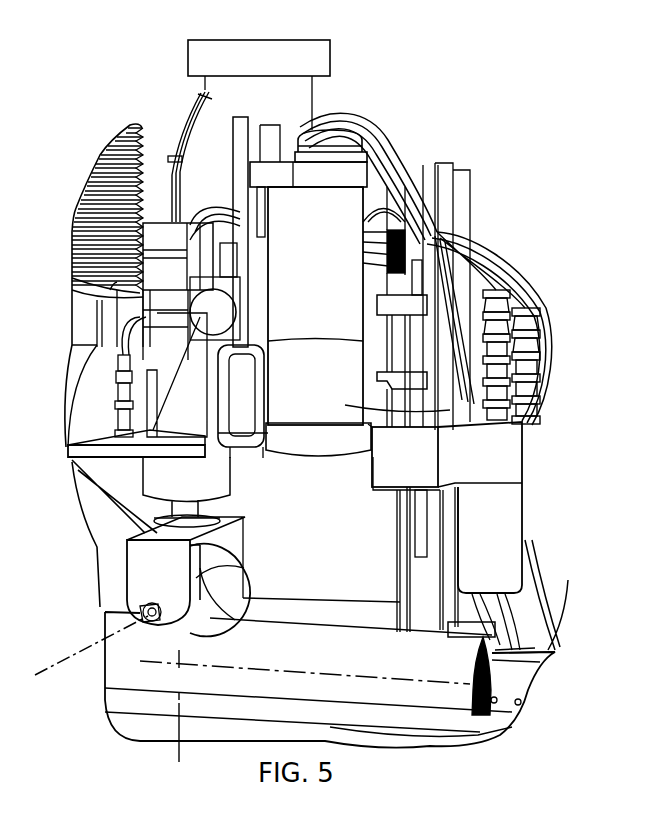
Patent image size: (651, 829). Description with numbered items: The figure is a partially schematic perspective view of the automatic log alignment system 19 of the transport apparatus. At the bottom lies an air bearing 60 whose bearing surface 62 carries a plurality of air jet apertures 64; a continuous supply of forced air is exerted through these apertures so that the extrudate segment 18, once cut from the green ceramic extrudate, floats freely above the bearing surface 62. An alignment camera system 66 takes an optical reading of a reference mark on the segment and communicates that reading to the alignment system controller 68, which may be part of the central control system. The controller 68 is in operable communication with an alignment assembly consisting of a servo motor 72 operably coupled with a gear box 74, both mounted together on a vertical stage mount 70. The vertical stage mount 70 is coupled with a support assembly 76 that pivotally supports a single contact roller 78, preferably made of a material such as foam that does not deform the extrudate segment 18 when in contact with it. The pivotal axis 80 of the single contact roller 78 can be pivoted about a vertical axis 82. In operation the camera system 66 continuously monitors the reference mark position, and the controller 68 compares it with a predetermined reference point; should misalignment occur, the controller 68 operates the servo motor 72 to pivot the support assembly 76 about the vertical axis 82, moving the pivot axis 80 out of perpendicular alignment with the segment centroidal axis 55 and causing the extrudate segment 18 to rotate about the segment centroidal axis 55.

The alignment system 19 is at (464, 93).
The alignment system controller 68 is at (333, 43).
The alignment camera system 66 is at (518, 393).
The servo motor 72 is at (125, 295).
The gear box 74 is at (125, 332).
The vertical stage mount 70 is at (75, 462).
The support assembly 76 is at (135, 570).
The single contact roller 78 is at (236, 556).
The pivotal axis 80 is at (50, 672).
The air bearing 60 is at (128, 702).
The segment centroidal axis 55 is at (452, 683).
The extrudate segment 18 is at (458, 700).
The bearing surface 62 is at (515, 682).
The air jet apertures 64 is at (522, 702).
The vertical axis 82 is at (177, 733).